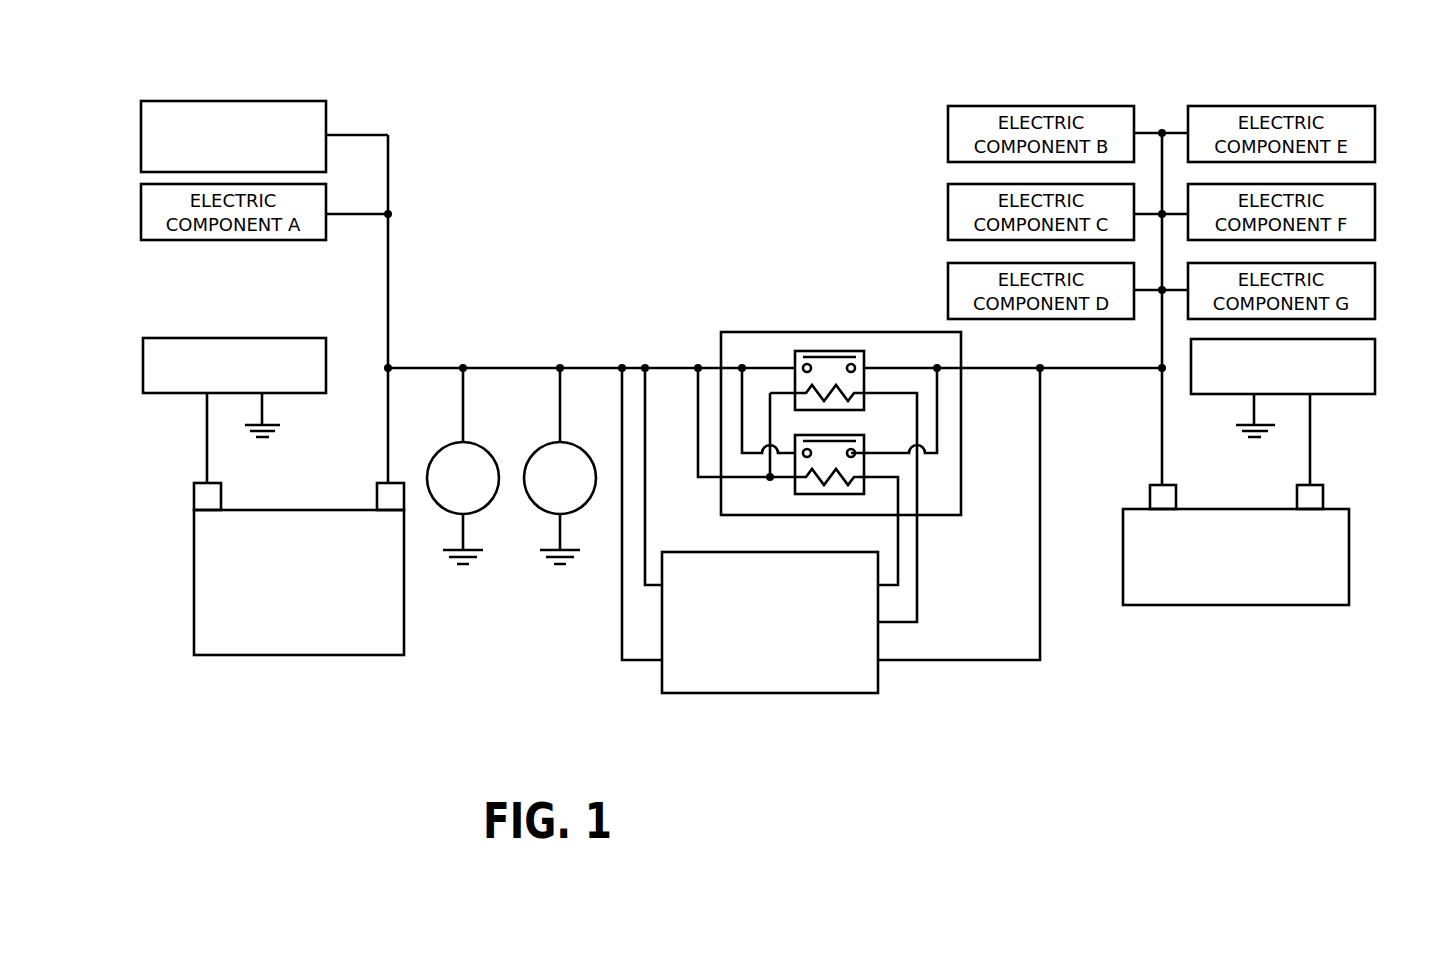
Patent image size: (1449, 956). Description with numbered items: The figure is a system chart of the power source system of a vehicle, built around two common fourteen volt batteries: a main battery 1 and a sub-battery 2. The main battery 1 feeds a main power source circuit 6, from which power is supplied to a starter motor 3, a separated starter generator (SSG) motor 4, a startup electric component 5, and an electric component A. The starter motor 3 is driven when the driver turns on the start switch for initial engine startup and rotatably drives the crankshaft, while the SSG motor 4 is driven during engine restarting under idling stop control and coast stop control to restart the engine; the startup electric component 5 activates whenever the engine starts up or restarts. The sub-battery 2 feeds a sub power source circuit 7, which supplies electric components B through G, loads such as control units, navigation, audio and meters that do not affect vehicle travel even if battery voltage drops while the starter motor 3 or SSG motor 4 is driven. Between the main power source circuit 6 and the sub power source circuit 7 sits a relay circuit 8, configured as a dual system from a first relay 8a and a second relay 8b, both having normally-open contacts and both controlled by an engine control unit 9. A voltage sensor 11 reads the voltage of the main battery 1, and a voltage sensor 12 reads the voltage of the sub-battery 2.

The main battery 1 is at (194, 578).
The sub-battery 2 is at (1349, 545).
The starter motor 3 is at (576, 512).
The separated starter generator (SSG) motor 4 is at (478, 512).
The startup electric component 5 is at (165, 101).
The main power source circuit 6 is at (388, 446).
The sub power source circuit 7 is at (1162, 445).
The relay circuit 8 is at (816, 427).
The first relay 8a is at (826, 351).
The second relay 8b is at (795, 480).
The engine control unit 9 is at (762, 693).
The voltage sensor 11 is at (165, 338).
The voltage sensor 12 is at (1355, 339).